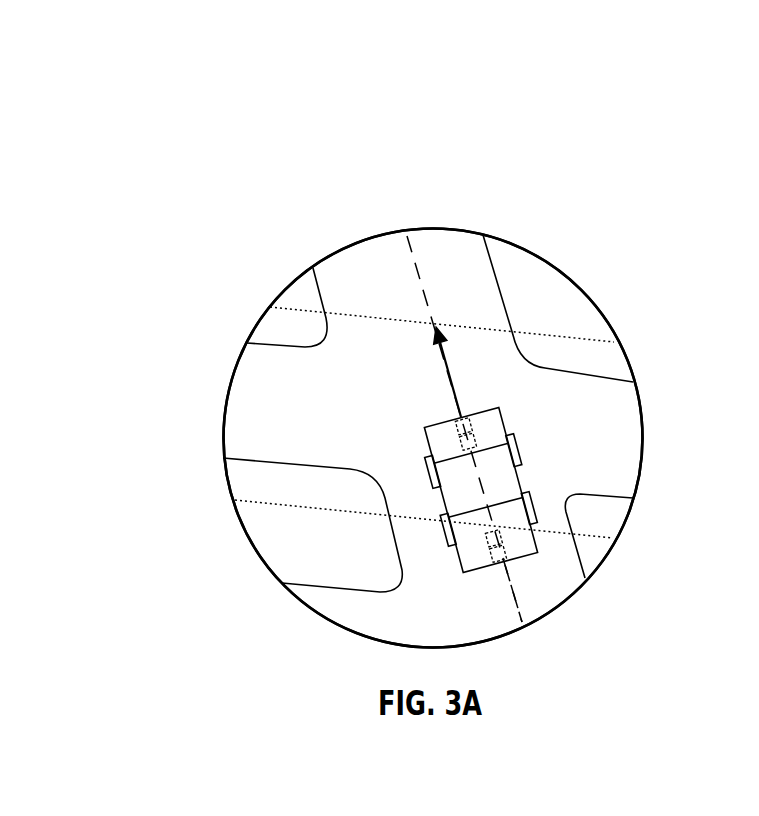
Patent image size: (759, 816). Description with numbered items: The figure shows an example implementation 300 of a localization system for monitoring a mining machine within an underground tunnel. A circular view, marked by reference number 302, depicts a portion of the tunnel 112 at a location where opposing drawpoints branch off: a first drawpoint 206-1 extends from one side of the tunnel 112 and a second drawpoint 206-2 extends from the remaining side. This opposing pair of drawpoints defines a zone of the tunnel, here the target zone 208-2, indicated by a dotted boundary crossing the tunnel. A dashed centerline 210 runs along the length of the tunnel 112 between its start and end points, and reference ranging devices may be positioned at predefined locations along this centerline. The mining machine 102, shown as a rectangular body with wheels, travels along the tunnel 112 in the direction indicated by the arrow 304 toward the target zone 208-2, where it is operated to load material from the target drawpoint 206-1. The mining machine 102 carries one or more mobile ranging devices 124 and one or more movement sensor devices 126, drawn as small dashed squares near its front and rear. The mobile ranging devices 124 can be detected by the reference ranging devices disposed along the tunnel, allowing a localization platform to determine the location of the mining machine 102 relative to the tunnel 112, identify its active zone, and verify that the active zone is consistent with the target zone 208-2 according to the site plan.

The example implementation 300 is at (266, 80).
The reference number 302 is at (367, 237).
The tunnel 112 is at (447, 242).
The target zone 208-2 is at (587, 335).
The arrow 304 is at (447, 373).
The mining machine 102 is at (428, 437).
The mobile ranging device 124 is at (472, 423).
The movement sensor device 126 is at (473, 443).
The first drawpoint 206-1 is at (228, 435).
The second drawpoint 206-2 is at (620, 483).
The centerline 210 is at (518, 598).